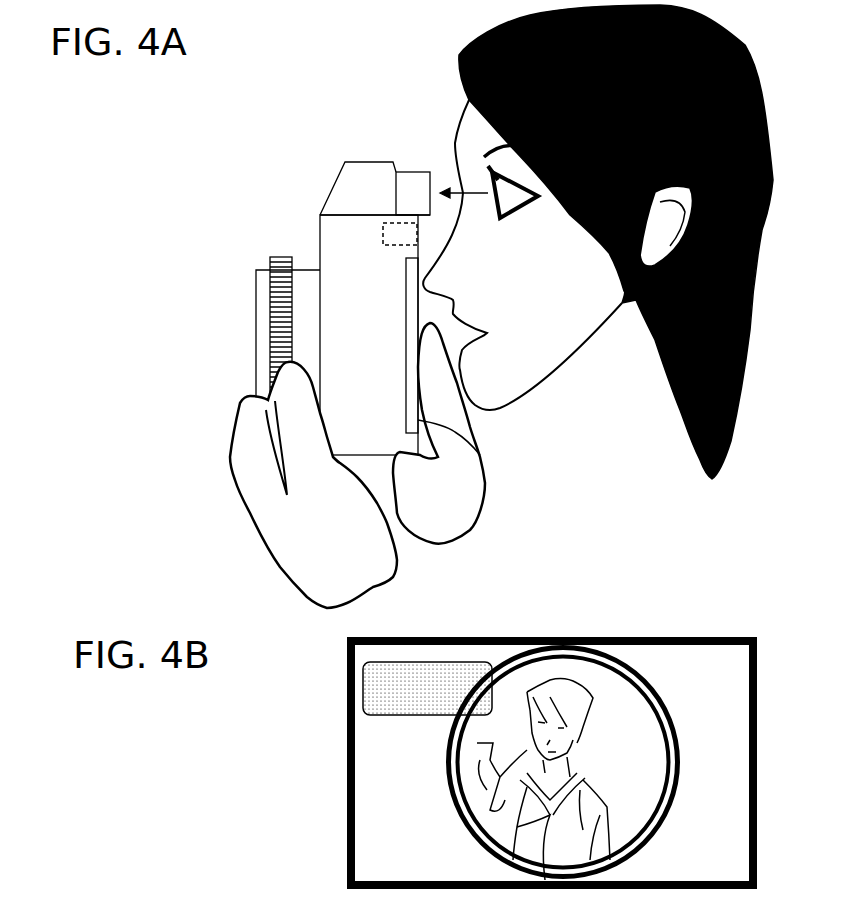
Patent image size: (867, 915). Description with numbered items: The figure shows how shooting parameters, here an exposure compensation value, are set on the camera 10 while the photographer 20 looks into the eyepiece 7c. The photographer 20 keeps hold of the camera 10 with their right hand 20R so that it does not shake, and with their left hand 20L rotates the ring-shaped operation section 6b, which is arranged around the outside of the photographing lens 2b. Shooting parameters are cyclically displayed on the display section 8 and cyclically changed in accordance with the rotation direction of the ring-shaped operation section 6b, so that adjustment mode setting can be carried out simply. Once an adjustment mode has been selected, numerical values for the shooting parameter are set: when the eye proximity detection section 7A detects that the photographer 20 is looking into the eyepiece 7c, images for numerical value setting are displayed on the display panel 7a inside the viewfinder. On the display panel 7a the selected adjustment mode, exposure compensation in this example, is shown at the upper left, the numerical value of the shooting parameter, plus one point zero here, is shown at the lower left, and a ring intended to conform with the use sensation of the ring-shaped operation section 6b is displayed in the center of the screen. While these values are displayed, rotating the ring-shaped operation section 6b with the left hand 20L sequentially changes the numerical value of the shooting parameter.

In FIG. 4A, the camera 10 is at (345, 162).
In FIG. 4A, the eyepiece 7c is at (410, 172).
In FIG. 4A, the photographer 20 is at (455, 143).
In FIG. 4A, the eye proximity detection section 7A is at (383, 235).
In FIG. 4A, the ring-shaped operation section 6b is at (270, 260).
In FIG. 4A, the photographing lens 2b is at (256, 332).
In FIG. 4A, the display section 8 is at (483, 457).
In FIG. 4A, the left hand 20L is at (257, 532).
In FIG. 4A, the right hand 20R is at (483, 493).
In FIG. 4B, the display panel 7a is at (365, 752).